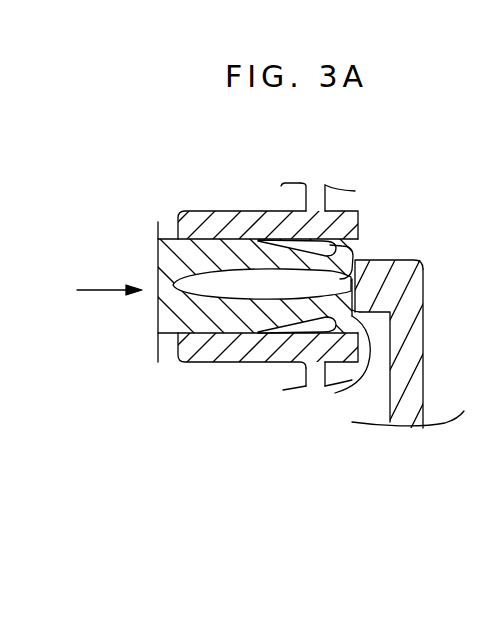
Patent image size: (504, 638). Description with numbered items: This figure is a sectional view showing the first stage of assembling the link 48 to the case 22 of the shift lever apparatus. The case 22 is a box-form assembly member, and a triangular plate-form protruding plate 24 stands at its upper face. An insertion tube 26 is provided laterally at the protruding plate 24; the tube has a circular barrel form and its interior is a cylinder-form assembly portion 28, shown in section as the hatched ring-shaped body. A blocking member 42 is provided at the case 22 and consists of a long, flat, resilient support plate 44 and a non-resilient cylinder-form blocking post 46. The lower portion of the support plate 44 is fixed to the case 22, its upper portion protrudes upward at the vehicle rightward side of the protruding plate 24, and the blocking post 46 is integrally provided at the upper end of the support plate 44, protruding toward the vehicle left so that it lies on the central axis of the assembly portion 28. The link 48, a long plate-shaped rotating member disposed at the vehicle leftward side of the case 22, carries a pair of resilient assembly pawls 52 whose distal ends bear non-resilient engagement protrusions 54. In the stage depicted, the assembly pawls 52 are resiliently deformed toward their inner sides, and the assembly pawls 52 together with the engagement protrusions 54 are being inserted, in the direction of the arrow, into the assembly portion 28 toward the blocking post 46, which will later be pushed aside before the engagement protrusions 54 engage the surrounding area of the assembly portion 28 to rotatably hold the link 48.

The case 22 is at (308, 196).
The protruding plate 24 is at (306, 255).
The insertion tube 26 is at (272, 257).
The assembly portion 28 is at (247, 238).
The blocking member 42 is at (430, 380).
The support plate 44 is at (412, 412).
The blocking post 46 is at (392, 268).
The link 48 is at (166, 232).
The assembly pawls 52 is at (320, 204).
The engagement protrusions 54 is at (348, 262).